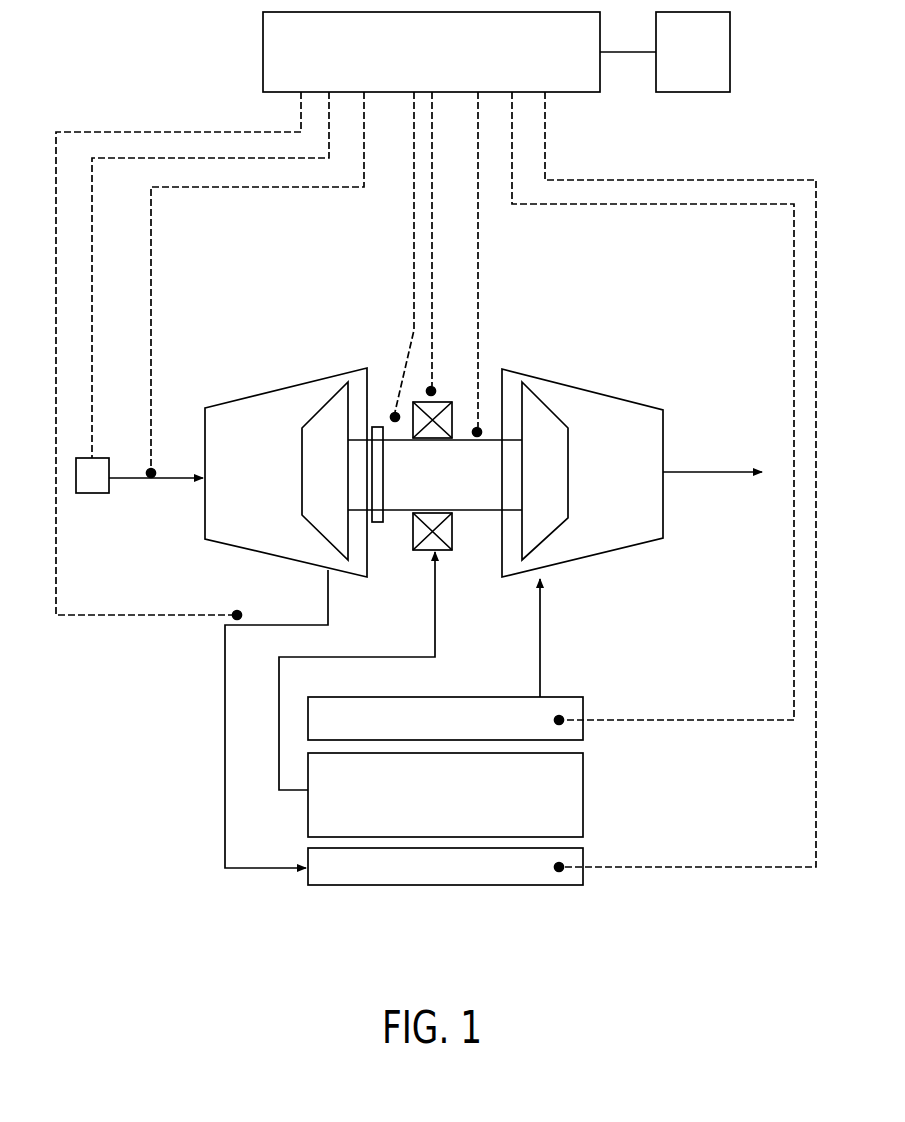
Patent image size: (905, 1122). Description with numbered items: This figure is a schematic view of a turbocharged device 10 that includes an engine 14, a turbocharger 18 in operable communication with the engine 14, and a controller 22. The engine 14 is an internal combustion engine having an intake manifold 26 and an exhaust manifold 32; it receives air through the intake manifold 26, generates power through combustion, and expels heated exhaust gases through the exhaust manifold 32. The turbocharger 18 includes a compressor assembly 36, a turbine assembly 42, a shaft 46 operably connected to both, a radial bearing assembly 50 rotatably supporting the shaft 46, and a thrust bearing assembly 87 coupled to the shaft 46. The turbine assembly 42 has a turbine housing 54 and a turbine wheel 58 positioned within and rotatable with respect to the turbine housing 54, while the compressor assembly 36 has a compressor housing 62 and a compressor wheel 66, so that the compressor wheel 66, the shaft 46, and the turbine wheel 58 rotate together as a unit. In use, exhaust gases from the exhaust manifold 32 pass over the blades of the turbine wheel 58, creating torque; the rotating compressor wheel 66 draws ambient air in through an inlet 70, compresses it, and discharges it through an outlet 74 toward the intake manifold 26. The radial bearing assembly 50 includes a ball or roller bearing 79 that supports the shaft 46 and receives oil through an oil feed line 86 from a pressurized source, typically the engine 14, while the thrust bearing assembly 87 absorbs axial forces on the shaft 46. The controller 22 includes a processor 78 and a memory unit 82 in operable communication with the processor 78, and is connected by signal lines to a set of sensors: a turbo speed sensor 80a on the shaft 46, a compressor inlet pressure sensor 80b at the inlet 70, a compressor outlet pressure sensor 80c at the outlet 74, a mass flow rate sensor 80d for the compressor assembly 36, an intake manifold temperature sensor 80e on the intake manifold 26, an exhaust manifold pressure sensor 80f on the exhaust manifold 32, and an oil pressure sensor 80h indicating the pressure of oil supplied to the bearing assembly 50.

The turbocharged device 10 is at (150, 888).
The engine 14 is at (567, 802).
The turbocharger 18 is at (632, 450).
The controller 22 is at (404, 57).
The intake manifold 26 is at (438, 887).
The exhaust manifold 32 is at (470, 696).
The compressor assembly 36 is at (286, 454).
The turbine assembly 42 is at (544, 378).
The shaft 46 is at (478, 512).
The radial bearing assembly 50 is at (414, 552).
The turbine housing 54 is at (588, 558).
The turbine wheel 58 is at (550, 480).
The compressor housing 62 is at (240, 398).
The compressor wheel 66 is at (310, 485).
The inlet 70 is at (178, 482).
The outlet 74 is at (322, 568).
The processor 78 is at (262, 72).
The ball or roller bearing 79 is at (439, 552).
The memory unit 82 is at (732, 45).
The oil feed line 86 is at (371, 671).
The thrust bearing assembly 87 is at (377, 427).
The turbo speed sensor 80a is at (477, 437).
The compressor inlet pressure sensor 80b is at (152, 468).
The compressor outlet pressure sensor 80c is at (233, 617).
The mass flow rate sensor 80d is at (90, 495).
The intake manifold temperature sensor 80e is at (560, 873).
The exhaust manifold pressure sensor 80f is at (560, 715).
The oil pressure sensor 80h is at (428, 389).